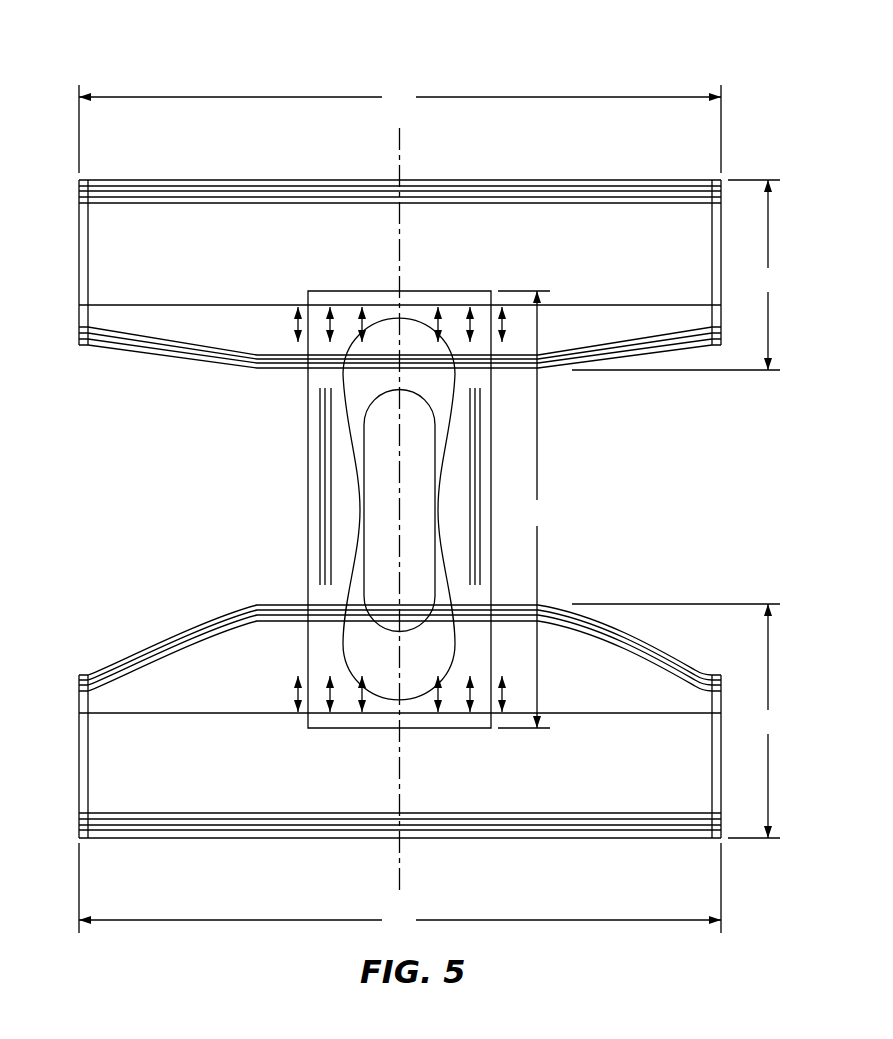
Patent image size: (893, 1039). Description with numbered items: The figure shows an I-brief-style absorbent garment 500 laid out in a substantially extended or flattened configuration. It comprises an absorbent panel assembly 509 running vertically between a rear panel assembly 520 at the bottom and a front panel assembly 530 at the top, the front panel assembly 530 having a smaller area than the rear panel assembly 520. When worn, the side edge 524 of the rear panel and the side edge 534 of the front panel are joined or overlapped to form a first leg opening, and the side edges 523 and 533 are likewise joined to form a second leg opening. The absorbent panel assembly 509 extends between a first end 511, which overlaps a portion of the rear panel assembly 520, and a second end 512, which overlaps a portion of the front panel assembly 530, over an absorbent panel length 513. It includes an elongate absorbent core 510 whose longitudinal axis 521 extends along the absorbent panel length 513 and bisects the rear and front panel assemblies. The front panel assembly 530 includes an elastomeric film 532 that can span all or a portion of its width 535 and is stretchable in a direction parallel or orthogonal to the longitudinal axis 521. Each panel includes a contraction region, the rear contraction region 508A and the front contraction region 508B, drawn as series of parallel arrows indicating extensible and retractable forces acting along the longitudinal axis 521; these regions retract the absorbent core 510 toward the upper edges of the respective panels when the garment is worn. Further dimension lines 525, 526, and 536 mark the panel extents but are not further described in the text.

The I-brief-style absorbent garment 500 is at (110, 46).
The rear contraction region 508A is at (292, 676).
The front contraction region 508B is at (292, 293).
The absorbent panel assembly 509 is at (300, 492).
The absorbent core 510 is at (375, 528).
The first end 511 is at (436, 729).
The second end 512 is at (368, 290).
The absorbent panel length 513 is at (525, 509).
The rear panel assembly 520 is at (623, 665).
The longitudinal axis 521 is at (401, 152).
The side edge 523 is at (721, 705).
The side edge 524 is at (78, 704).
The front panel width 525 is at (400, 888).
The front panel length 526 is at (677, 721).
The front panel assembly 530 is at (160, 325).
The elastomeric film 532 is at (109, 229).
The side edge 533 is at (721, 263).
The side edge 534 is at (78, 259).
The width 535 is at (400, 129).
The back panel length 536 is at (677, 275).